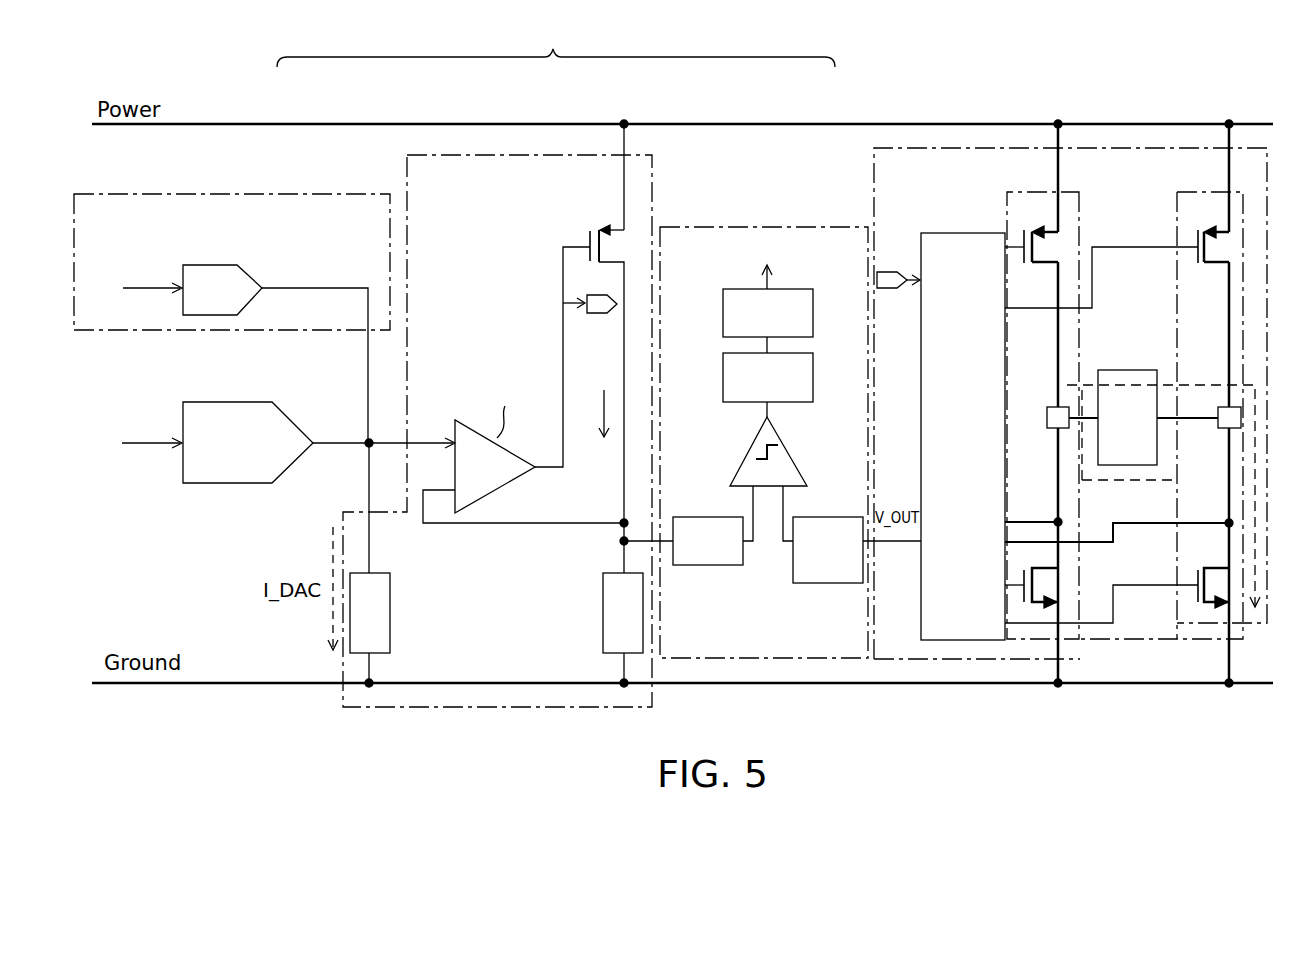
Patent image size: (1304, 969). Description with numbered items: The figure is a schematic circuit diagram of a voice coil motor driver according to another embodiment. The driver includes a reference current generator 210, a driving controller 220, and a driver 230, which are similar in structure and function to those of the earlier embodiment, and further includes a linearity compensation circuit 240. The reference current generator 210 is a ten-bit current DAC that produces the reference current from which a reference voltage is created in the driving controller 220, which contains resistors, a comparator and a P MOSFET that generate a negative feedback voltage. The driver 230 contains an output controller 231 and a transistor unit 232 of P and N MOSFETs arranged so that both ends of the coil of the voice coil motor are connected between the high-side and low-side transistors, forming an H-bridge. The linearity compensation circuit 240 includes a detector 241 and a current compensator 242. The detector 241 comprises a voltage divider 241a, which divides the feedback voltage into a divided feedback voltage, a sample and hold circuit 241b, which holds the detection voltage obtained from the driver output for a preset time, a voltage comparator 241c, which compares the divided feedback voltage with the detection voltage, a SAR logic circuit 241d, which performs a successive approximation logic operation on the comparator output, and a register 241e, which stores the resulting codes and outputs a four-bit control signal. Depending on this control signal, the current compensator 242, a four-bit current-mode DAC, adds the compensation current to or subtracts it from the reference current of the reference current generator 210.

The reference current generator 210 is at (226, 402).
The driving controller 220 is at (653, 166).
The driver 230 is at (1145, 148).
The output controller 231 is at (963, 233).
The PMOS transistor PM1 switch 232 is at (1079, 215).
The linearity compensation circuit 240 is at (556, 43).
The detector 241 is at (768, 227).
The voltage divider 241a is at (710, 567).
The sample and hold circuit 241b is at (830, 585).
The voltage comparator 241c is at (793, 457).
The SAR logic circuit 241d is at (838, 362).
The register 241e is at (813, 313).
The current compensator 242 is at (247, 195).